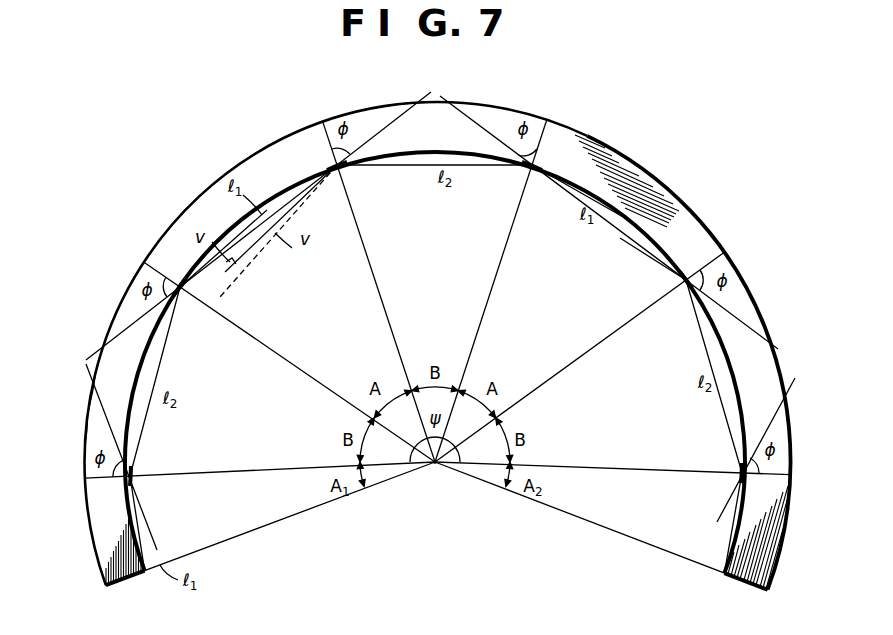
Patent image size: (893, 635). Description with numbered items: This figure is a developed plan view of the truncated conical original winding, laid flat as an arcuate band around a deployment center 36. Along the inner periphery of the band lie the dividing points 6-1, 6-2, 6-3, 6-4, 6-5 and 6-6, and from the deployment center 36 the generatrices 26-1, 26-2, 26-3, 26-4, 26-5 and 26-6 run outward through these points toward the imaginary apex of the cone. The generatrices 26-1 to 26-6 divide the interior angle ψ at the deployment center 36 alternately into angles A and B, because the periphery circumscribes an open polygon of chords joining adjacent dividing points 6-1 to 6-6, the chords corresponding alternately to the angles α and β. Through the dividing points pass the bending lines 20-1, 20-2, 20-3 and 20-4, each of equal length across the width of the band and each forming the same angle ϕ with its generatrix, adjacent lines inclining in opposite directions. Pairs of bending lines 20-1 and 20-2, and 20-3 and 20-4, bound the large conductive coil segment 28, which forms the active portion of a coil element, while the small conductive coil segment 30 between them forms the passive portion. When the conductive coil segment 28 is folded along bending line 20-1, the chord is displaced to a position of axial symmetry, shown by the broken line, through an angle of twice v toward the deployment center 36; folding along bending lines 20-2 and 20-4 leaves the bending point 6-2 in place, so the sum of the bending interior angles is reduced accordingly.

The conductive coil segment 28 is at (282, 165).
The conductive coil segment 30 is at (107, 375).
The deployment center 36 is at (435, 465).
The dividing point 6-1 is at (340, 168).
The dividing point 6-2 is at (181, 290).
The dividing point 6-3 is at (132, 479).
The dividing point 6-4 is at (741, 474).
The dividing point 6-5 is at (684, 281).
The dividing point 6-6 is at (533, 168).
The bending line 20-1 is at (383, 122).
The bending line 20-2 is at (121, 305).
The bending line 20-3 is at (101, 422).
The bending line 20-4 is at (786, 378).
The generatrix 26-1 is at (374, 272).
The generatrix 26-2 is at (499, 275).
The generatrix 26-3 is at (592, 352).
The generatrix 26-4 is at (620, 477).
The generatrix 26-5 is at (256, 468).
The generatrix 26-6 is at (298, 360).